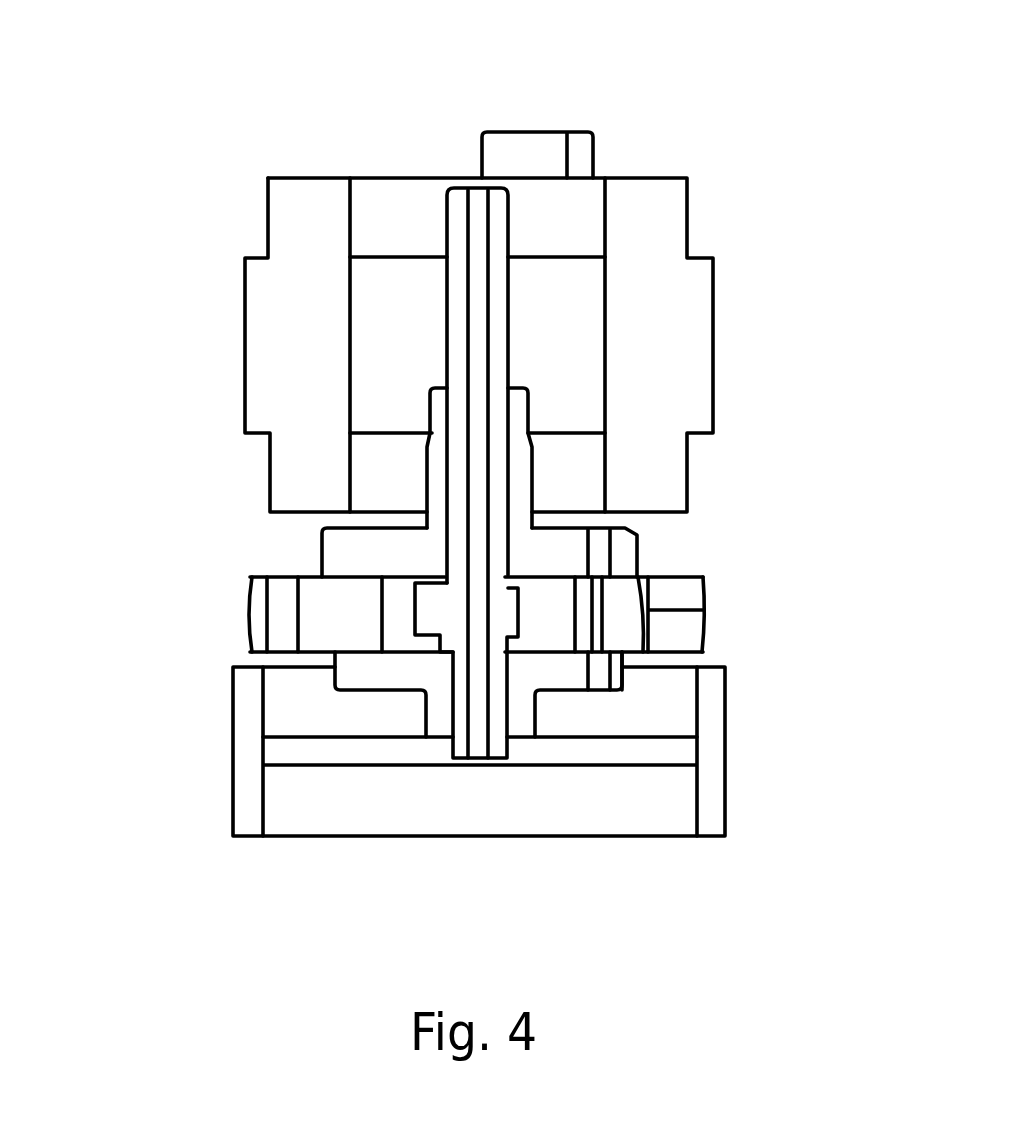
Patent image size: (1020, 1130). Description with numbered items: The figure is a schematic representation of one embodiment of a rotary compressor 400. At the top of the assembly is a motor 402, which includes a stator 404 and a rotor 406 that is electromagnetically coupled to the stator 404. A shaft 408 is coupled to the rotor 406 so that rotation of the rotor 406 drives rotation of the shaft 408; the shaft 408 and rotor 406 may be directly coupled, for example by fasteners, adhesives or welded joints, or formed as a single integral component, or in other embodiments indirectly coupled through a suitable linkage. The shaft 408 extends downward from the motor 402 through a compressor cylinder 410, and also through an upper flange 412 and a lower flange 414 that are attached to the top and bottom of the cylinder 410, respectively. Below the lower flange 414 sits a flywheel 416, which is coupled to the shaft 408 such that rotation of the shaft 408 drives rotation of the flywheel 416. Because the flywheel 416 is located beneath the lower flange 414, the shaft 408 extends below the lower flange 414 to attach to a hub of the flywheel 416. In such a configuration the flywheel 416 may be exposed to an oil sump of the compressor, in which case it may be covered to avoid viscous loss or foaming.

The rotary compressor 400 is at (732, 108).
The motor 402 is at (690, 237).
The stator 404 is at (690, 327).
The rotor 406 is at (395, 316).
The shaft 408 is at (452, 222).
The compressor cylinder 410 is at (313, 610).
The upper flange 412 is at (357, 555).
The lower flange 414 is at (370, 663).
The flywheel 416 is at (707, 743).